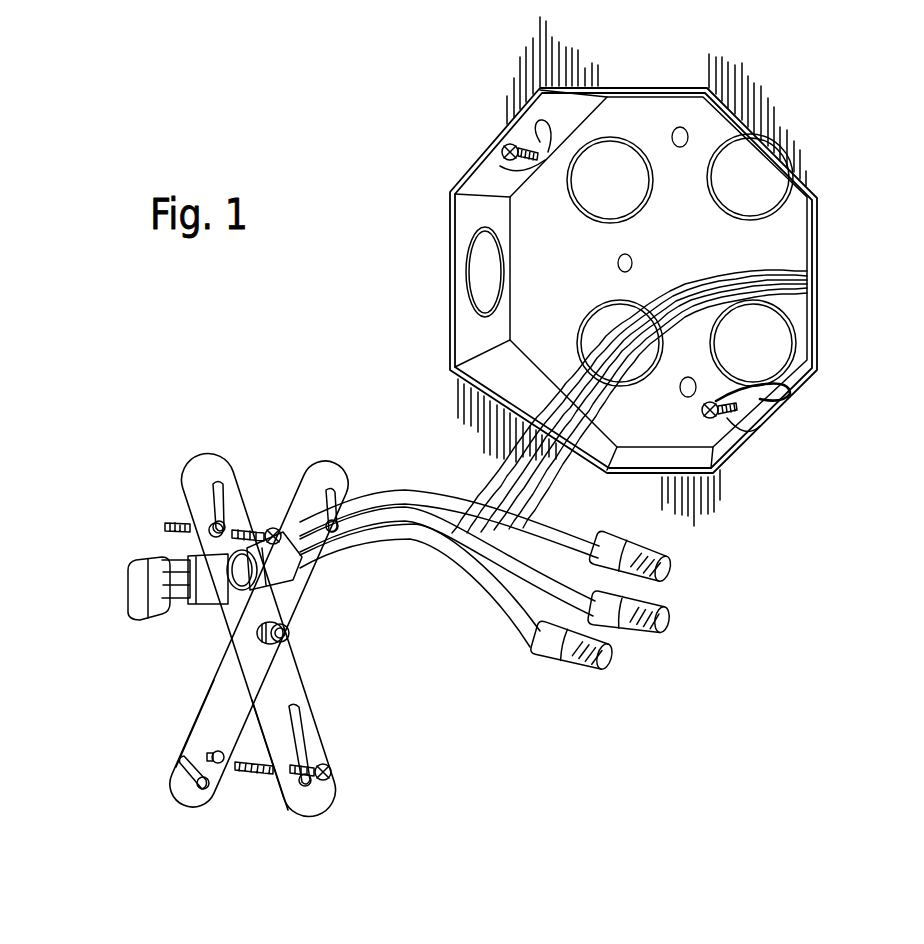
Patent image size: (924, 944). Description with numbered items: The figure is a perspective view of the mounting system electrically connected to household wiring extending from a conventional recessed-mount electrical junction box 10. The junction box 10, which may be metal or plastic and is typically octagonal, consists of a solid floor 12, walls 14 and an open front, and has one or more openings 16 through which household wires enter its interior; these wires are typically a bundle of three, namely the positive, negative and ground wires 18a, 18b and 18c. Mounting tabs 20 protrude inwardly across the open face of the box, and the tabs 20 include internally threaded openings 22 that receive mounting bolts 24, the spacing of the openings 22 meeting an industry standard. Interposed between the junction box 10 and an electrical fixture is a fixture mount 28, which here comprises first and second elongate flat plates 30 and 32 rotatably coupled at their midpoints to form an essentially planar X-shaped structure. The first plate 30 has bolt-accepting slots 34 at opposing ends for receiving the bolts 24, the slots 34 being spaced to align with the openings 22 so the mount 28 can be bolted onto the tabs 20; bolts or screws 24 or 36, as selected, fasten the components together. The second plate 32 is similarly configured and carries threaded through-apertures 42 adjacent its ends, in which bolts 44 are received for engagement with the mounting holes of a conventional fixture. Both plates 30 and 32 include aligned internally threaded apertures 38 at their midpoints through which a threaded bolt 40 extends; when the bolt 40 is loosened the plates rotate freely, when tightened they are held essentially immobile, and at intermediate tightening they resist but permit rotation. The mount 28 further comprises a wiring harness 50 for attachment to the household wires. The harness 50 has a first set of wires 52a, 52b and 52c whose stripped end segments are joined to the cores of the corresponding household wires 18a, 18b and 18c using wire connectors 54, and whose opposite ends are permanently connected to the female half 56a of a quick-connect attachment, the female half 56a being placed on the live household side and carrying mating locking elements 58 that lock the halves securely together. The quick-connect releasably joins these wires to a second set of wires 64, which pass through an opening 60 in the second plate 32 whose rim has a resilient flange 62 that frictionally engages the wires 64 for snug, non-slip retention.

The junction box 10 is at (777, 251).
The solid floor 12 is at (559, 257).
The walls 14 is at (452, 198).
The openings 16 is at (493, 278).
The positive wire 18a is at (692, 292).
The negative wire 18b is at (714, 286).
The ground wire 18c is at (727, 294).
The mounting tabs 20 is at (546, 140).
The internally threaded openings 22 is at (535, 158).
The mounting bolts 24 is at (504, 144).
The fixture mount 28 is at (185, 465).
The first plate 30 is at (180, 732).
The second plate 32 is at (287, 686).
The bolt-accepting slots 34 is at (190, 760).
The screws 36 is at (219, 764).
The internally threaded apertures 38 is at (258, 645).
The threaded bolt 40 is at (292, 628).
The threaded through-apertures 42 is at (226, 482).
The bolts 44 is at (258, 525).
The wiring harness 50 is at (366, 431).
The electrical wire 52a is at (477, 497).
The electrical wire 52b is at (447, 528).
The electrical wire 52c is at (498, 620).
The wire connectors 54 is at (628, 538).
The female connector half 56a is at (172, 604).
The locking elements 58 is at (140, 616).
The opening 60 is at (214, 565).
The resilient flange 62 is at (226, 573).
The second set of electrical wires 64 is at (288, 528).